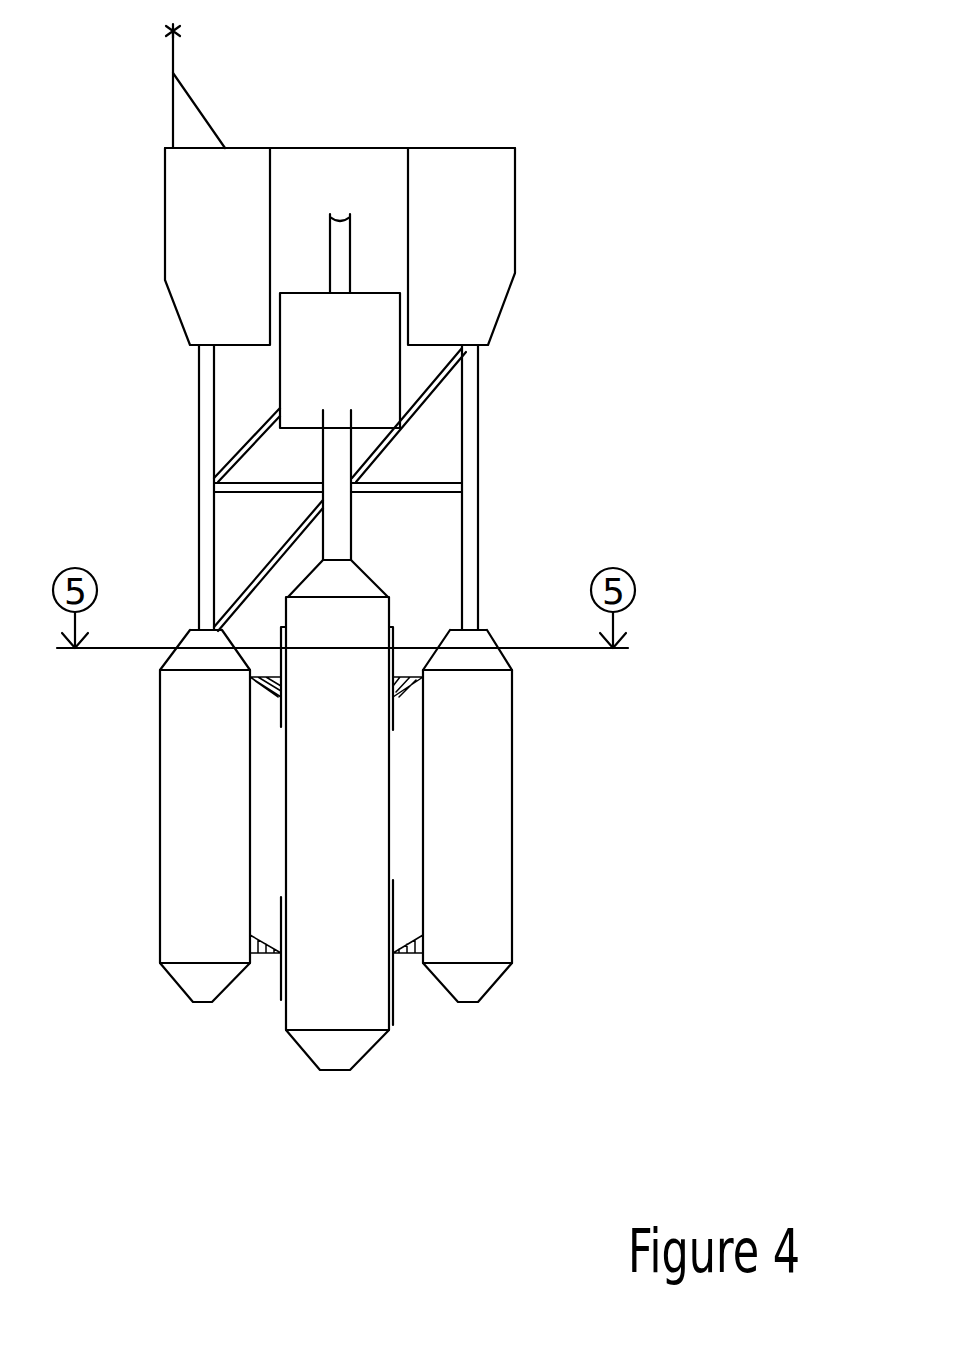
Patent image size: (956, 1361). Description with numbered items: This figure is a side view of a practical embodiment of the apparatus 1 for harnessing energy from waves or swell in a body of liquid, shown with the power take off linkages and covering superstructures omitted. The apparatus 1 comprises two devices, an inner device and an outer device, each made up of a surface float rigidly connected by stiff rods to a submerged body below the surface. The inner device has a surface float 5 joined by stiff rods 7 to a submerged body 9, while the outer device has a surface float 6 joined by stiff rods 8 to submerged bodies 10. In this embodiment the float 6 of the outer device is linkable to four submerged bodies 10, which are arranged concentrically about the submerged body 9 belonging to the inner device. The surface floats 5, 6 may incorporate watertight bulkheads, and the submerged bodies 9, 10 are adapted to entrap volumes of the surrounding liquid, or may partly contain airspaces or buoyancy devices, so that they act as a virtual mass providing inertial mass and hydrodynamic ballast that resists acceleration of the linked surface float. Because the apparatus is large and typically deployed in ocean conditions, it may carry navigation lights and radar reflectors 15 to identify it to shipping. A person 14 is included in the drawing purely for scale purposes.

The apparatus 1 is at (722, 380).
The surface float 5 is at (380, 290).
The surface float 6 is at (515, 185).
The stiff rod 7 is at (212, 494).
The stiff rod 8 is at (478, 432).
The submerged body 9 is at (383, 1017).
The submerged body 10 is at (512, 832).
The person 14 is at (237, 142).
The navigation lights and radar reflectors 15 is at (166, 58).